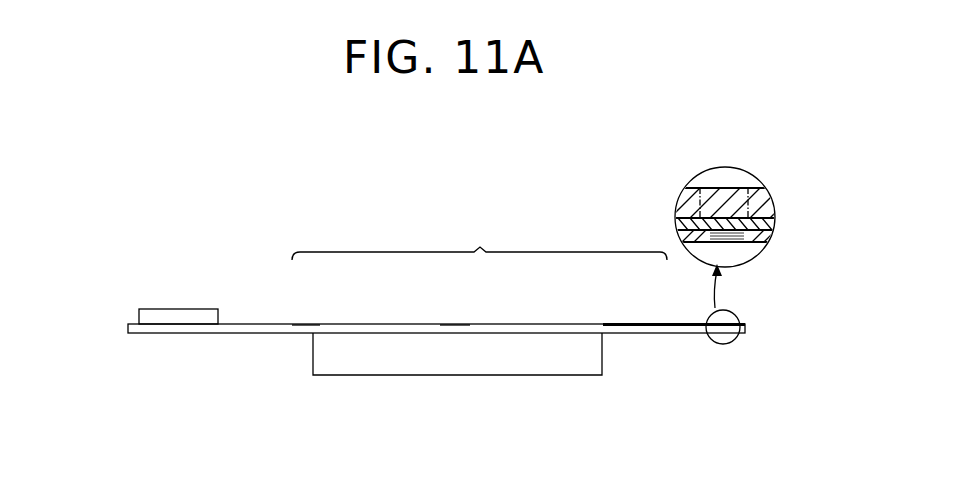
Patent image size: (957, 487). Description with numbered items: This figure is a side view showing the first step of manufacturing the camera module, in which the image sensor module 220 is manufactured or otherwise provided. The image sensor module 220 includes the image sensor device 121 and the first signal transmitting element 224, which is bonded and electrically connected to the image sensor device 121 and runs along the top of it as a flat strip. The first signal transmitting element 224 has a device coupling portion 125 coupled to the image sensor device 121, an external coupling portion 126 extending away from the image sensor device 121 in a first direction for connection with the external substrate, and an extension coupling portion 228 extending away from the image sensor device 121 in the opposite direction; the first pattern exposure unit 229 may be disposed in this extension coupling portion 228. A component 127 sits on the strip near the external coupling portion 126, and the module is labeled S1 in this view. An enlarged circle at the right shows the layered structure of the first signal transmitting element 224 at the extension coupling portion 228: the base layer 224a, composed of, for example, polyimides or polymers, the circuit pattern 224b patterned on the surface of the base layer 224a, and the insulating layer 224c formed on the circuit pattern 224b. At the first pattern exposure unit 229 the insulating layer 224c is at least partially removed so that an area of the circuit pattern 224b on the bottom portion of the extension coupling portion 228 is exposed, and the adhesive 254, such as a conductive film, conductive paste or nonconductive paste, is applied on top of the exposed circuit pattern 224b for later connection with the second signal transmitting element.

The substrate S1 is at (116, 329).
The image sensor module 220 is at (120, 248).
The connector 127 is at (176, 317).
The external coupling portion 126 is at (286, 325).
The device coupling portion 125 is at (454, 325).
The extension coupling portion 228 is at (672, 324).
The first signal transmitting element 224 is at (479, 241).
The base layer 224a is at (767, 205).
The circuit pattern 224b is at (768, 224).
The insulating layer 224c is at (768, 239).
The first pattern exposure unit 229 is at (728, 192).
The adhesive 254 is at (735, 243).
The image sensor device 121 is at (596, 356).